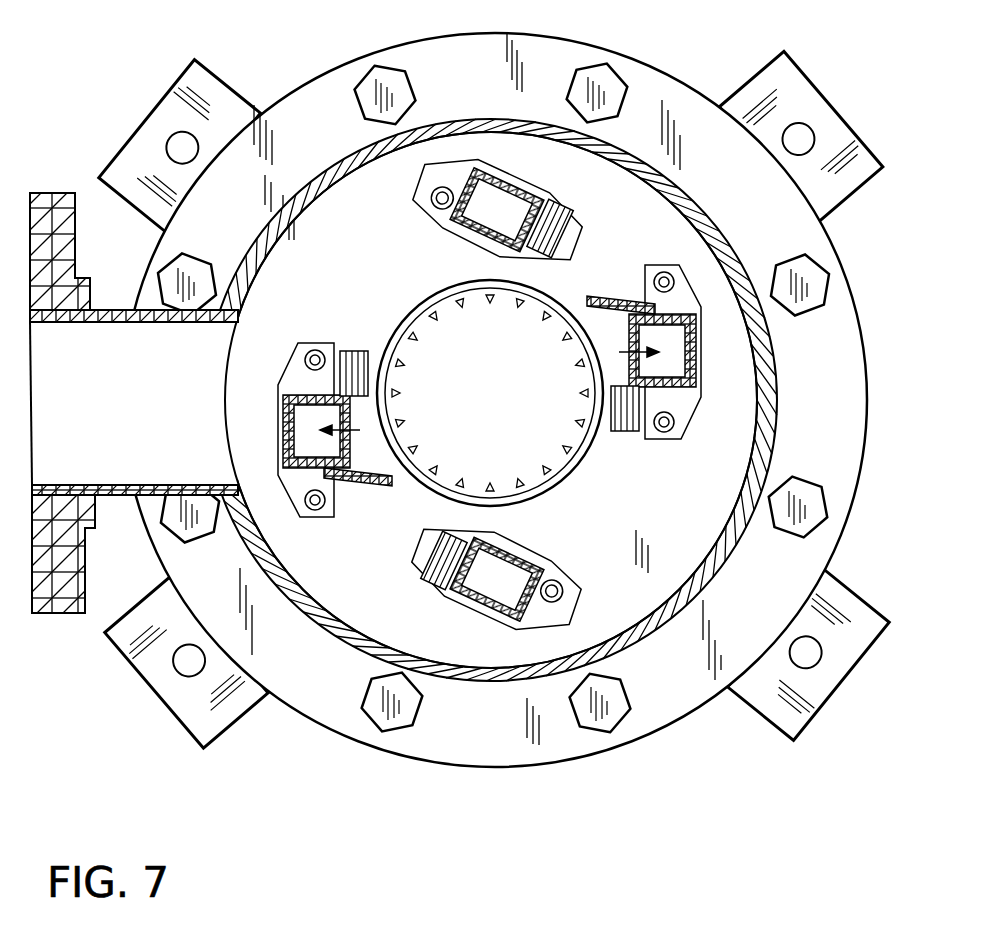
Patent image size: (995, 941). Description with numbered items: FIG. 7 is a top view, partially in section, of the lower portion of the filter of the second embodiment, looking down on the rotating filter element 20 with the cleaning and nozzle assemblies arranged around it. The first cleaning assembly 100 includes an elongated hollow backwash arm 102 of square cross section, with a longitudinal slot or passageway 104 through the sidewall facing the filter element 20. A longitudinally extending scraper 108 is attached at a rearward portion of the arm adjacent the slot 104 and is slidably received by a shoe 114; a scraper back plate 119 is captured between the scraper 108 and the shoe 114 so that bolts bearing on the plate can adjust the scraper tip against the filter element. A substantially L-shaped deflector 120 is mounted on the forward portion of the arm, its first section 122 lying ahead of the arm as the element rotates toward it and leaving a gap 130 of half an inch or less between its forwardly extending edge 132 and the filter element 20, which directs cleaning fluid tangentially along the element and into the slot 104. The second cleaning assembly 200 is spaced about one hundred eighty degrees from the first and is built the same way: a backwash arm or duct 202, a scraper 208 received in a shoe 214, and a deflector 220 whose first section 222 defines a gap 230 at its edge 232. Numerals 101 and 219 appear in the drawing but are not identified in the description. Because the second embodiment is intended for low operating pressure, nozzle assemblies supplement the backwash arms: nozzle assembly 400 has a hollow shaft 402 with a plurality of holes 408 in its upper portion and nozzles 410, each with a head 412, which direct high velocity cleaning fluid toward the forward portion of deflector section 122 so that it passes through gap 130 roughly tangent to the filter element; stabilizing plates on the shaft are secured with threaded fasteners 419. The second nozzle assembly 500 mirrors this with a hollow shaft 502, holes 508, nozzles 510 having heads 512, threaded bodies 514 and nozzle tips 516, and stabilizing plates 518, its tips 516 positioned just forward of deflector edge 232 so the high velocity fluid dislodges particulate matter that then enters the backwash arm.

The filter element 20 is at (405, 320).
The first cleaning assembly 100 is at (272, 335).
The gap 101 is at (596, 358).
The backwash arm 102 is at (283, 435).
The slot or passageway 104 is at (372, 405).
The scraper 108 is at (380, 375).
The shoe 114 is at (346, 350).
The scraper back plate 119 is at (285, 378).
The deflector 120 is at (326, 505).
The first section 122 is at (350, 500).
The gap 130 is at (400, 442).
The forwardly extending edge 132 is at (435, 478).
The second cleaning assembly 200 is at (714, 300).
The backwash arm or duct 202 is at (698, 356).
The scraper 208 is at (590, 400).
The shoe 214 is at (632, 440).
The bracket wall 219 is at (614, 440).
The deflector 220 is at (615, 300).
The first section 222 is at (595, 304).
The gap 230 is at (640, 345).
The deflector edge 232 is at (548, 306).
The nozzle assembly 400 is at (572, 542).
The hollow shaft 402 is at (505, 542).
The holes 408 is at (483, 598).
The nozzles 410 is at (400, 560).
The head 412 is at (410, 548).
The threaded fasteners 419 is at (566, 585).
The second nozzle assembly 500 is at (498, 145).
The hollow shaft 502 is at (525, 182).
The holes 508 is at (460, 232).
The nozzles 510 is at (575, 230).
The head 512 is at (576, 245).
The threaded body 514 is at (552, 196).
The nozzle tip 516 is at (556, 258).
The stabilizing plates 518 is at (418, 210).